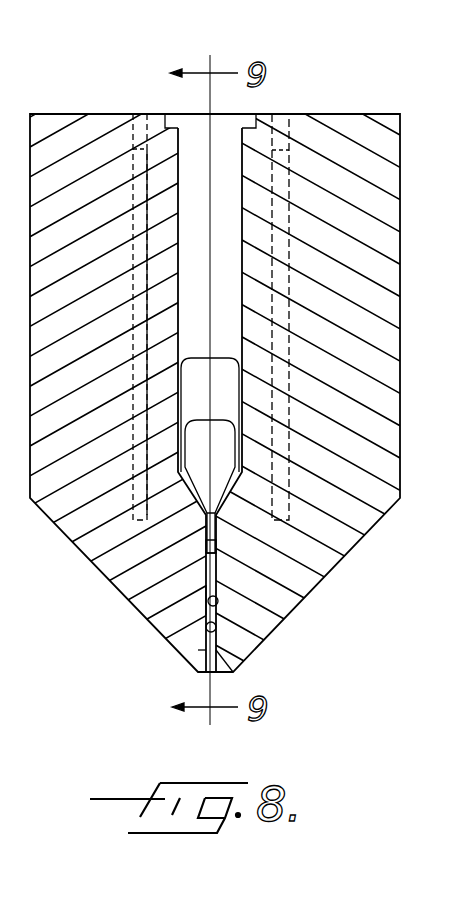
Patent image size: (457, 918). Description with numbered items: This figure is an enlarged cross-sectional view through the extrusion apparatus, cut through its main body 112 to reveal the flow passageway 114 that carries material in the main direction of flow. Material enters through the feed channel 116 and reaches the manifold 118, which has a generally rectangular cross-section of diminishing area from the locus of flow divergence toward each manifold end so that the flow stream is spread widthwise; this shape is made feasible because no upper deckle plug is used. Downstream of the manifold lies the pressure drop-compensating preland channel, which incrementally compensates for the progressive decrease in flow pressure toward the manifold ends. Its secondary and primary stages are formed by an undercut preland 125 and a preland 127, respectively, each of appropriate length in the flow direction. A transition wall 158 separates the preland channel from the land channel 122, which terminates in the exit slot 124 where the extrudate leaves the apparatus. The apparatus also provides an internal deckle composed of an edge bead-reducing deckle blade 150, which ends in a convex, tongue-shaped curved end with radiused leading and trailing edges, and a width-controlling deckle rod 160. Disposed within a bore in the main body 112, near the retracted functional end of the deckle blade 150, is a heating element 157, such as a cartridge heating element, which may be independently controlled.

The main body 112 is at (340, 116).
The flow passageway 114 is at (186, 310).
The feed channel 116 is at (231, 310).
The manifold 118 is at (231, 402).
The land channel 122 is at (216, 652).
The exit slot 124 is at (212, 674).
The undercut preland 125 is at (204, 561).
The preland 127 is at (209, 614).
The deckle blade 150 is at (222, 570).
The heating element 157 is at (131, 214).
The transition wall 158 is at (204, 642).
The deckle rod 160 is at (226, 621).